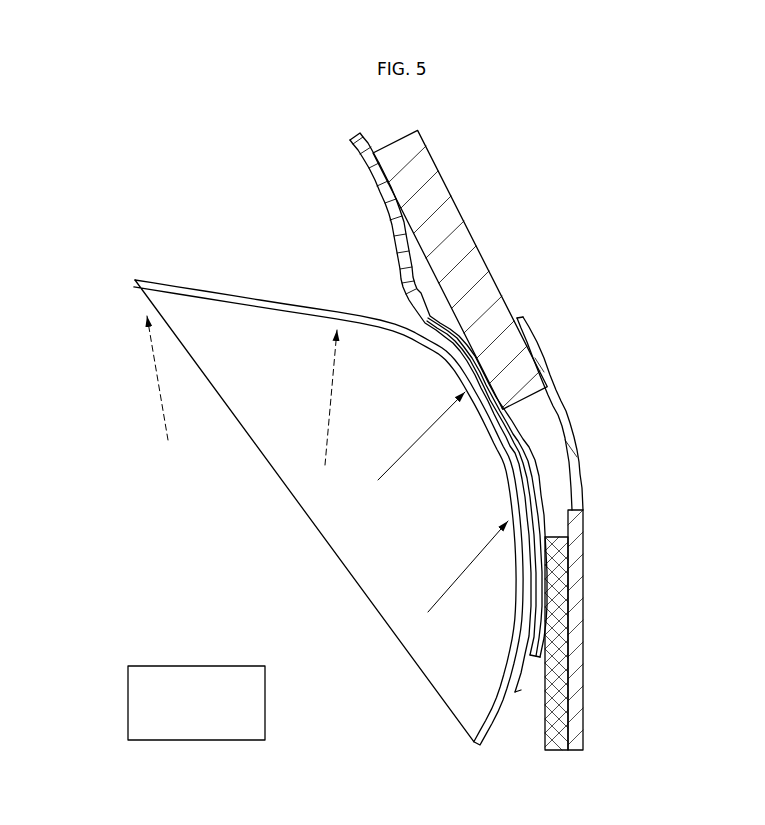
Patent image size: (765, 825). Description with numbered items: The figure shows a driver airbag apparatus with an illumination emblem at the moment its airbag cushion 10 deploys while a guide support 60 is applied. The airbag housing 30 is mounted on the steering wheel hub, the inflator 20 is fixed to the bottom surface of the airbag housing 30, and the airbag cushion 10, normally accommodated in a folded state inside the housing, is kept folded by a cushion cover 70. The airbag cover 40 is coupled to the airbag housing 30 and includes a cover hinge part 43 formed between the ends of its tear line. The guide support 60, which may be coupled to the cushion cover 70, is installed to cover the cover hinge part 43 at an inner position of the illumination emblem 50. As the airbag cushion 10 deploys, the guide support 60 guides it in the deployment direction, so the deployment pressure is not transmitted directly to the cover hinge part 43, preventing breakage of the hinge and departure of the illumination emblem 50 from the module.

The airbag cushion 10 is at (160, 281).
The inflator 20 is at (136, 706).
The airbag housing 30 is at (558, 603).
The airbag cover 40 is at (575, 653).
The cover hinge part 43 is at (561, 403).
The illumination emblem 50 is at (466, 255).
The guide support 60 is at (538, 493).
The cushion cover 70 is at (366, 168).